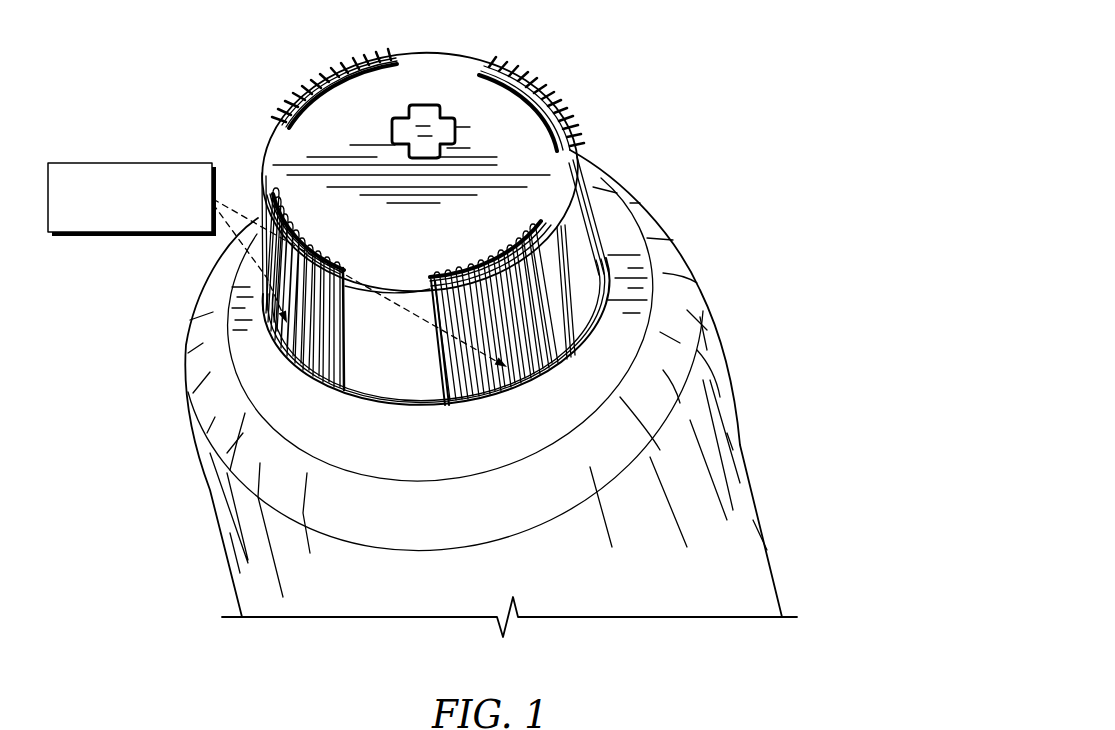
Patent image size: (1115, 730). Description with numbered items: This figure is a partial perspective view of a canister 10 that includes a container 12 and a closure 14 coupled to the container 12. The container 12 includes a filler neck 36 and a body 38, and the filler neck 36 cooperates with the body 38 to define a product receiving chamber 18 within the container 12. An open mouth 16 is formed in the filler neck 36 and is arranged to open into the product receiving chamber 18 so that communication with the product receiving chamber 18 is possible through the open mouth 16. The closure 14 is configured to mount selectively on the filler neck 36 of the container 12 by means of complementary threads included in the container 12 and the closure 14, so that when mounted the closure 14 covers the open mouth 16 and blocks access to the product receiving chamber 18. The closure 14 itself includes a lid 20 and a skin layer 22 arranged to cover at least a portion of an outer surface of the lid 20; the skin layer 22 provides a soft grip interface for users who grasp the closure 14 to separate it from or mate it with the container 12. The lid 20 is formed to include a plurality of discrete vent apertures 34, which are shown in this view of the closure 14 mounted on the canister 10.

The canister 10 is at (770, 100).
The container 12 is at (722, 290).
The closure 14 is at (560, 88).
The open mouth 16 is at (376, 252).
The product receiving chamber 18 is at (688, 496).
The lid 20 is at (428, 352).
The skin layer 22 is at (362, 378).
The vent apertures 34 is at (106, 162).
The filler neck 36 is at (572, 253).
The body 38 is at (725, 415).